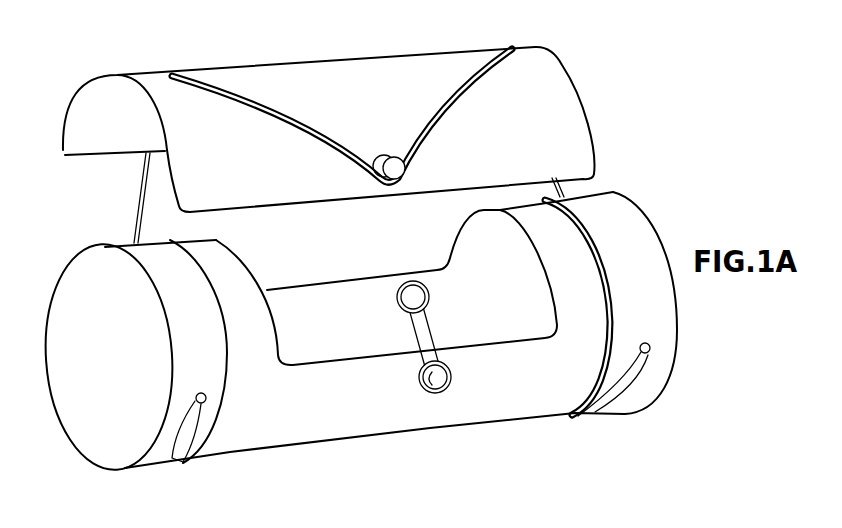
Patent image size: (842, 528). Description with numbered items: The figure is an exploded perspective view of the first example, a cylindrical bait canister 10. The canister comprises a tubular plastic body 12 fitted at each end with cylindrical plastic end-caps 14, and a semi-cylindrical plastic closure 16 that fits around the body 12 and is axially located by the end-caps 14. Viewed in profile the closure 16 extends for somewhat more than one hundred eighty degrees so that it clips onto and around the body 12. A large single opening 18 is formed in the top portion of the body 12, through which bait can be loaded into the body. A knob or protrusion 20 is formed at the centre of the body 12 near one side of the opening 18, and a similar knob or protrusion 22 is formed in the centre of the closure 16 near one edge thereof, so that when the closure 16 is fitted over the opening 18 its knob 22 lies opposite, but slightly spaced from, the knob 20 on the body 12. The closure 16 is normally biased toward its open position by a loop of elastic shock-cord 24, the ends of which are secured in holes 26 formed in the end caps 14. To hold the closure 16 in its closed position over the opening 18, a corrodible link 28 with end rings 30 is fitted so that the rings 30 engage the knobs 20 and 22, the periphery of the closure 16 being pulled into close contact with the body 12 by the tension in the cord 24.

The bait canister 10 is at (366, 254).
The tubular plastic body 12 is at (527, 395).
The cylindrical plastic end-caps 14 is at (112, 362).
The semi-cylindrical plastic closure 16 is at (553, 117).
The opening 18 is at (520, 250).
The knob or protrusion 20 is at (420, 383).
The knob or protrusion 22 is at (380, 157).
The elastic cord 24 is at (275, 110).
The holes 26 is at (198, 402).
The corrodible link 28 is at (430, 333).
The end rings 30 is at (429, 298).